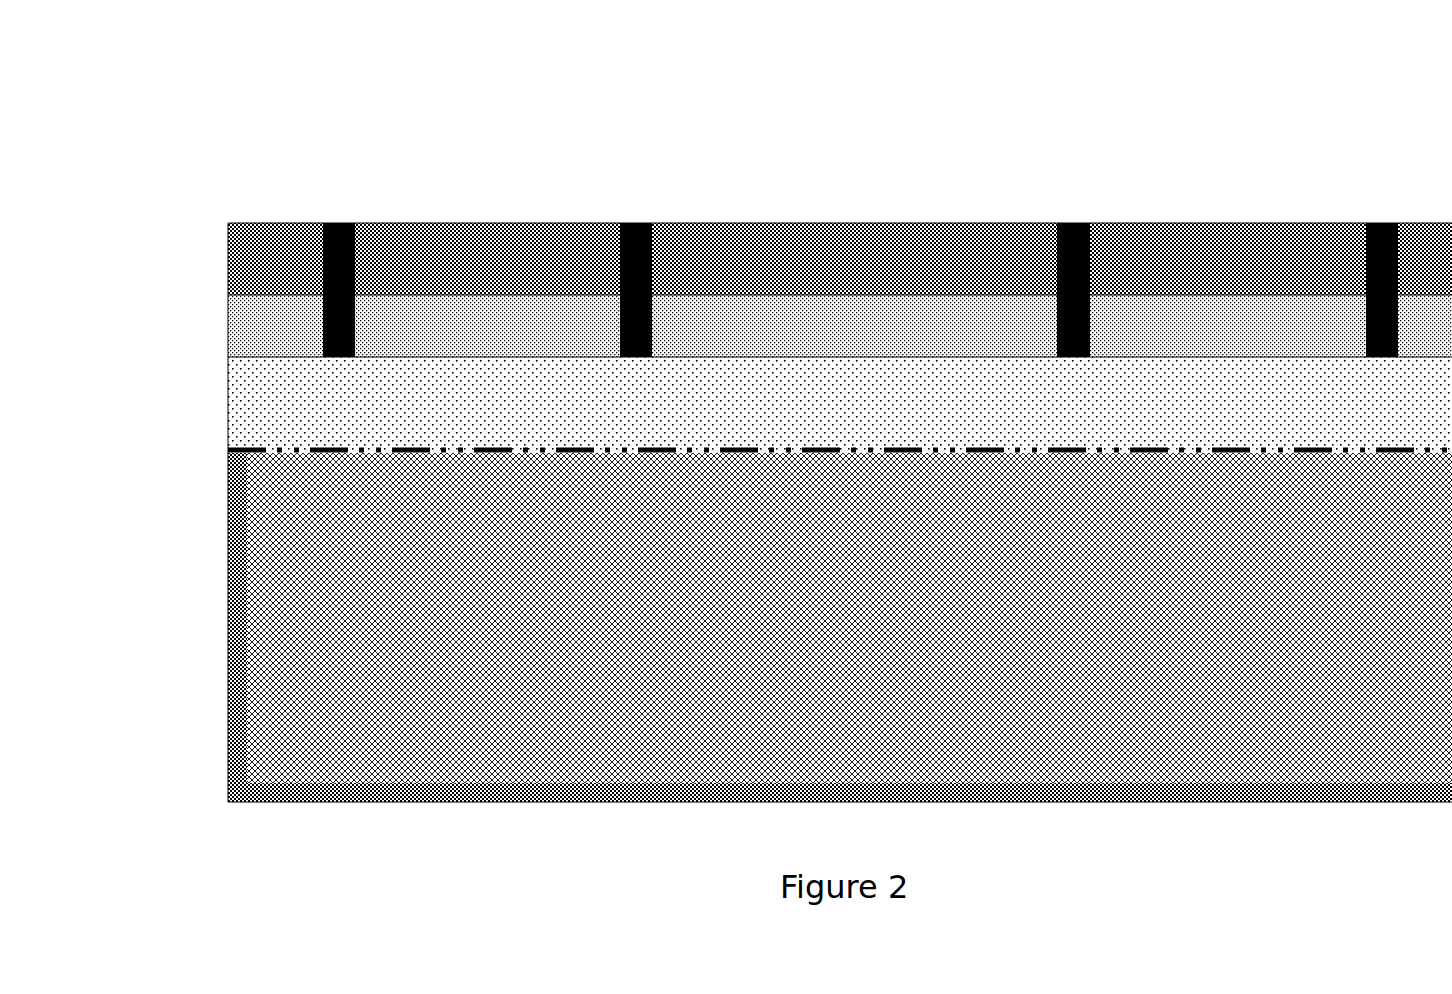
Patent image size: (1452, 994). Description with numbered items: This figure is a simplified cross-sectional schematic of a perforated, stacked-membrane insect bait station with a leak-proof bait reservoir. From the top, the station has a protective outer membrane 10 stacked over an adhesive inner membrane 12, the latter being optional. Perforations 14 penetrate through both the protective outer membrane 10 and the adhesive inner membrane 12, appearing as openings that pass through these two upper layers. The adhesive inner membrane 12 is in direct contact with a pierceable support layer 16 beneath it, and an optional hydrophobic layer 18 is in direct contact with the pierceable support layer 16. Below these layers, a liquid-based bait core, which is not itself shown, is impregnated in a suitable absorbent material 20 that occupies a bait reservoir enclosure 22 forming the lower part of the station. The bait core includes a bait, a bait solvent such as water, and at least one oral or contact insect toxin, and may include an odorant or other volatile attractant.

The protective outer membrane 10 is at (243, 258).
The adhesive inner membrane 12 is at (243, 340).
The perforations 14 is at (340, 222).
The pierceable support layer 16 is at (243, 415).
The hydrophobic layer 18 is at (268, 455).
The absorbent material 20 is at (268, 560).
The bait reservoir enclosure 22 is at (245, 685).